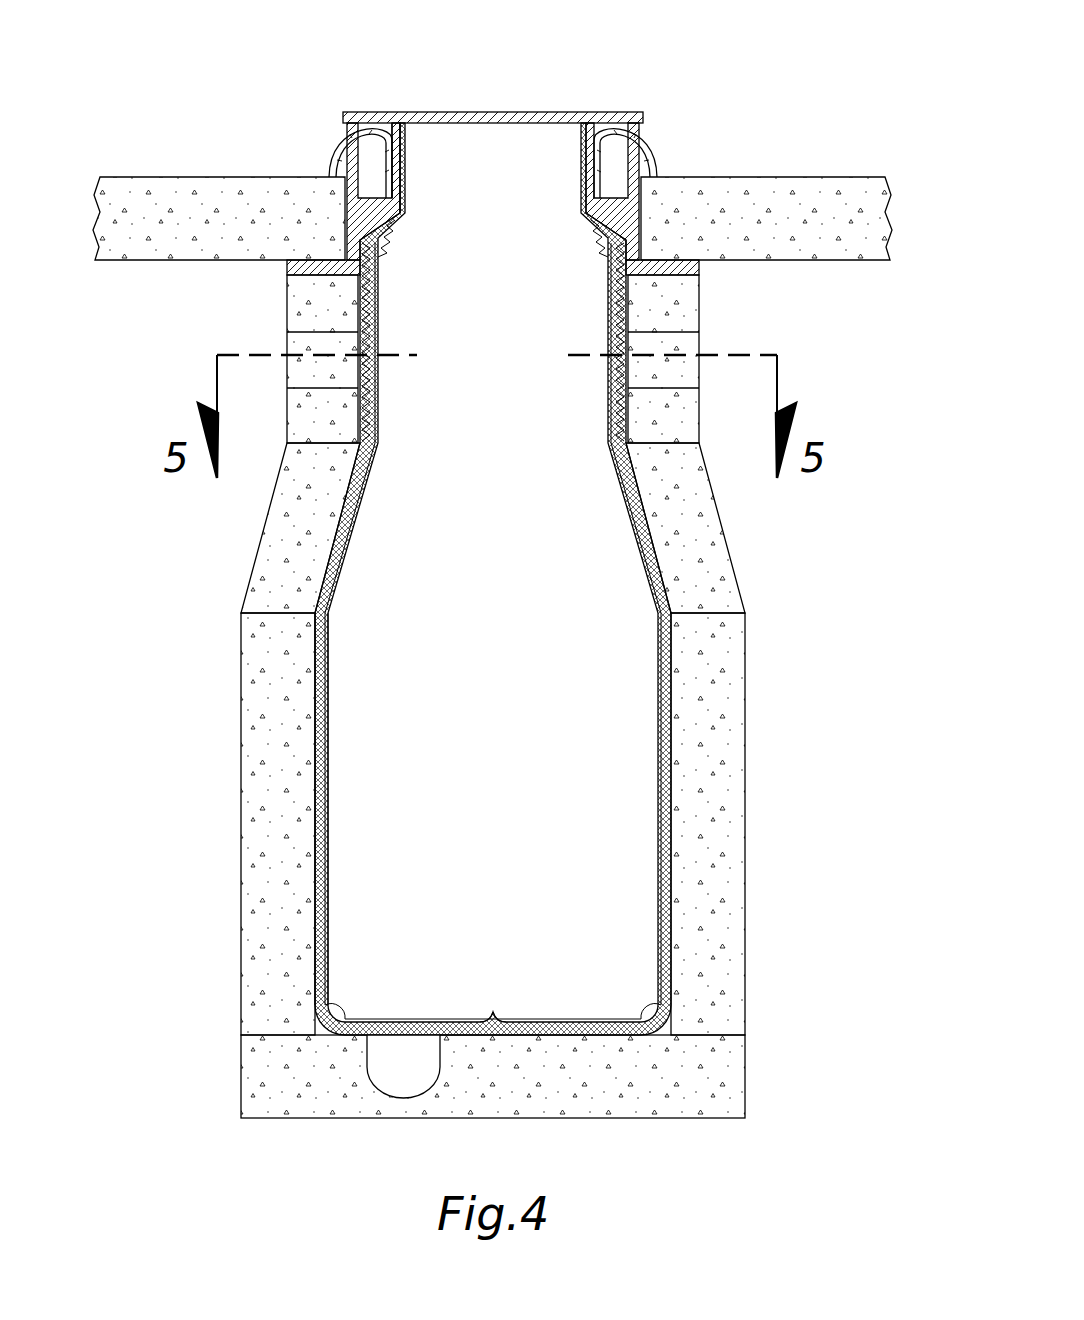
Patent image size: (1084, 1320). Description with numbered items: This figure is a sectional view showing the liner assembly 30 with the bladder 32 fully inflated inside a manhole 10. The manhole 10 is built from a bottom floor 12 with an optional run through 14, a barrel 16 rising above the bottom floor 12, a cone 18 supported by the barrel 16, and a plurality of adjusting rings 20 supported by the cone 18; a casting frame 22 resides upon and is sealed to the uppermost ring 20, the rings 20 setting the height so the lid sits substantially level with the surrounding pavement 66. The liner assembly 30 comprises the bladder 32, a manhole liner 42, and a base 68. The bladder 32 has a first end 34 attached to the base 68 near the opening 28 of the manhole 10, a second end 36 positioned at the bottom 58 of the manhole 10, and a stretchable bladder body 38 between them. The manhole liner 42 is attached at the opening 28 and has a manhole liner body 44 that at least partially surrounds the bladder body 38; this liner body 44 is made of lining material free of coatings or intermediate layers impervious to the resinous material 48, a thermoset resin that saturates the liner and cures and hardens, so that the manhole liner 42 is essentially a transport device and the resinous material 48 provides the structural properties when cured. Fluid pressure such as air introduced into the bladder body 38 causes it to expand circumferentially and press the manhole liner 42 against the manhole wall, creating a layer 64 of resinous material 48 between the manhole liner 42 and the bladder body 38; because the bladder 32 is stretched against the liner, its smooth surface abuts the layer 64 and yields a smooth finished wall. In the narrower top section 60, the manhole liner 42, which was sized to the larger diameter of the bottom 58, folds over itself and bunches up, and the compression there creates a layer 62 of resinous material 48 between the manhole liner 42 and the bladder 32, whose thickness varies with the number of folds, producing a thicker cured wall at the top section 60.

The manhole 10 is at (492, 559).
The bottom floor 12 is at (732, 1075).
The run through 14 is at (412, 1075).
The barrel 16 is at (735, 770).
The cone 18 is at (708, 507).
The adjusting rings 20 is at (298, 376).
The casting frame 22 is at (699, 265).
The opening 28 is at (493, 191).
The liner assembly 30 is at (464, 574).
The bladder 32 is at (330, 722).
The first end 34 is at (402, 125).
The second end 36 is at (393, 1030).
The bladder body 38 is at (662, 672).
The manhole liner 42 is at (315, 787).
The manhole liner body 44 is at (315, 682).
The resinous material 48 is at (371, 298).
The bottom 58 is at (494, 1017).
The top section 60 is at (373, 198).
The layer 62 is at (376, 233).
The layer 64 is at (372, 384).
The pavement 66 is at (242, 177).
The base 68 is at (362, 111).